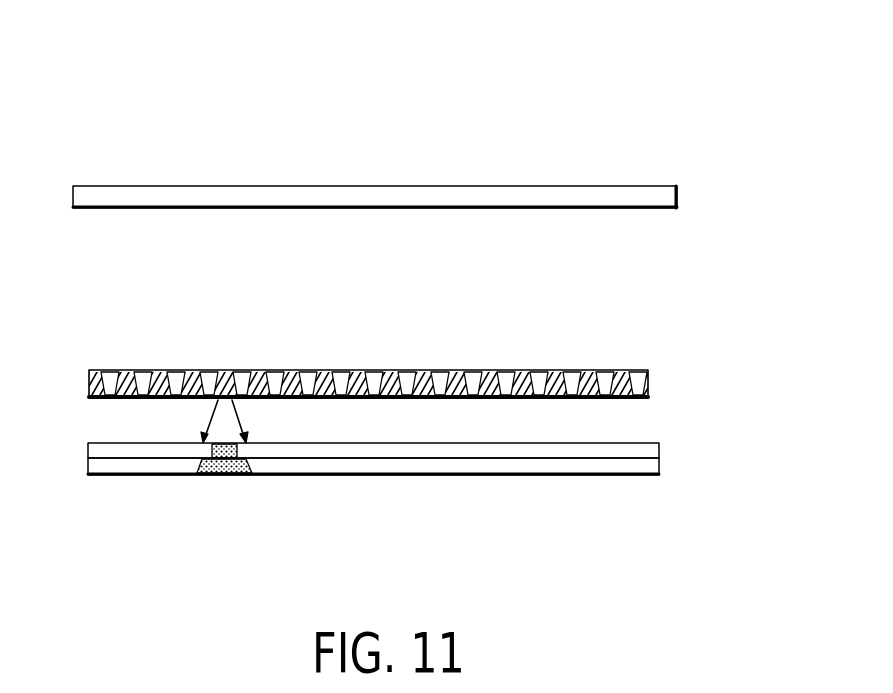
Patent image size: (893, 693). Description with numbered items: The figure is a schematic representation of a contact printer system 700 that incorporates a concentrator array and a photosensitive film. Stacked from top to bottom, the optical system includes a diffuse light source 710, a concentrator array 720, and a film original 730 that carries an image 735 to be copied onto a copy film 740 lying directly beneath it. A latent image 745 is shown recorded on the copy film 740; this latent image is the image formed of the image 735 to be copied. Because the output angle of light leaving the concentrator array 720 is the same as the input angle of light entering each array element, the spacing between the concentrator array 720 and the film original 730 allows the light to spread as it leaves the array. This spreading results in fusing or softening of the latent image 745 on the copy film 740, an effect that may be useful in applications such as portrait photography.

The contact printer system 700 is at (70, 132).
The diffuse light source 710 is at (568, 200).
The concentrator array 720 is at (458, 371).
The film original 730 is at (648, 450).
The image 735 is at (212, 451).
The copy film 740 is at (637, 478).
The latent image 745 is at (201, 466).